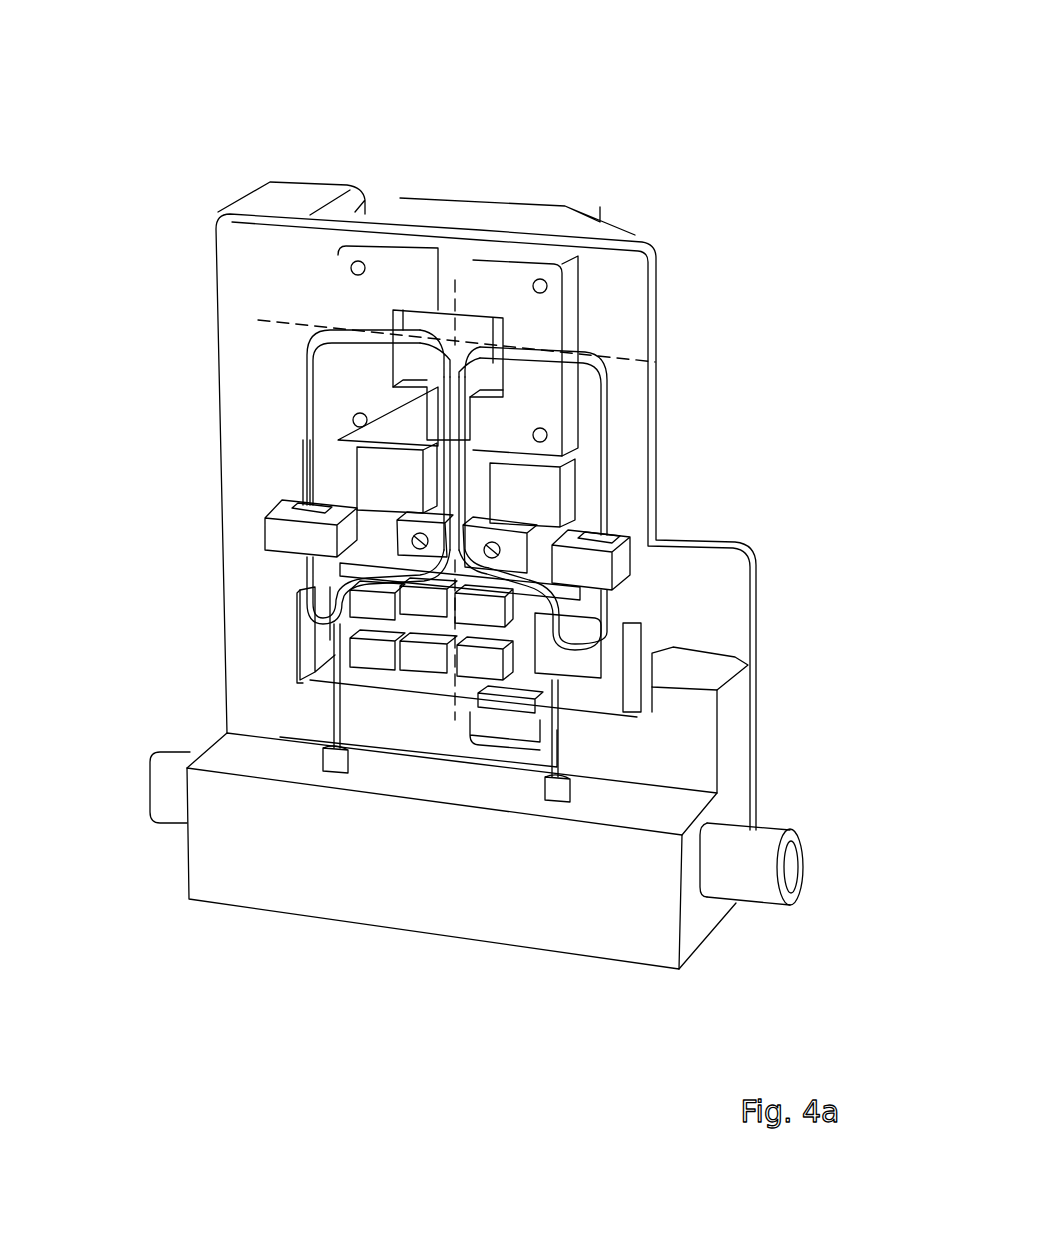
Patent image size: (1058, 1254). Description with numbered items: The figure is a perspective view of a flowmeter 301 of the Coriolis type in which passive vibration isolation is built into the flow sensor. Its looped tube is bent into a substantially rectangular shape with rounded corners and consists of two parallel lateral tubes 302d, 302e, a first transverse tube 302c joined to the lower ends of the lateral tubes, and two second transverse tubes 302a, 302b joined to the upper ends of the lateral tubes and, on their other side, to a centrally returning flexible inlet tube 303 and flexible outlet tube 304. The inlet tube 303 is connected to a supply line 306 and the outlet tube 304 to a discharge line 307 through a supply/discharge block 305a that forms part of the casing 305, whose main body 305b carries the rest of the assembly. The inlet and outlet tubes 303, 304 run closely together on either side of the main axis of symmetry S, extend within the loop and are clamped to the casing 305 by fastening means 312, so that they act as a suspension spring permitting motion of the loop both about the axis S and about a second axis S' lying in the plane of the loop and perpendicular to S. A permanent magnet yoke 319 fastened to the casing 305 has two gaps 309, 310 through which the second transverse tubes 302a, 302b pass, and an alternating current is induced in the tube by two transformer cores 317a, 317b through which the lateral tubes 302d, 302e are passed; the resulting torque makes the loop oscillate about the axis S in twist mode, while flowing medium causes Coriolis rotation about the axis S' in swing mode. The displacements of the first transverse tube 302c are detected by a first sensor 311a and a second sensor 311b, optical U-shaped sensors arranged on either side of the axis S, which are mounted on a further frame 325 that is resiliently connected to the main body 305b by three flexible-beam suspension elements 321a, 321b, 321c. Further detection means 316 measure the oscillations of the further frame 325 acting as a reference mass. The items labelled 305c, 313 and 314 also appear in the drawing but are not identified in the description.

The flowmeter 301 is at (709, 128).
The second transverse tube 302a is at (343, 367).
The second transverse tube 302b is at (575, 380).
The first transverse tube 302c is at (340, 643).
The lateral tube 302d is at (620, 622).
The lateral tube 302e is at (330, 380).
The flexible inlet tube 303 is at (453, 377).
The flexible outlet tube 304 is at (463, 377).
The casing 305 is at (483, 845).
The supply/discharge block 305a is at (215, 877).
The main body 305b is at (238, 297).
The right edge of back plate 305c is at (683, 563).
The supply line 306 is at (167, 795).
The discharge line 307 is at (762, 857).
The gap 309 is at (337, 367).
The gap 310 is at (557, 343).
The first sensor 311a is at (360, 657).
The second sensor 311b is at (410, 657).
The fastening means 312 is at (410, 533).
The first sensor unit 313 is at (397, 478).
The second sensor unit 314 is at (532, 493).
The further detection means 316 is at (583, 663).
The transformer core 317a is at (287, 537).
The transformer core 317b is at (655, 560).
The permanent magnet yoke 319 is at (458, 270).
The suspension element 321a is at (313, 637).
The suspension element 321b is at (640, 655).
The suspension element 321c is at (520, 672).
The further frame 325 is at (520, 672).
The main axis of symmetry S is at (442, 374).
The second axis S' is at (376, 308).